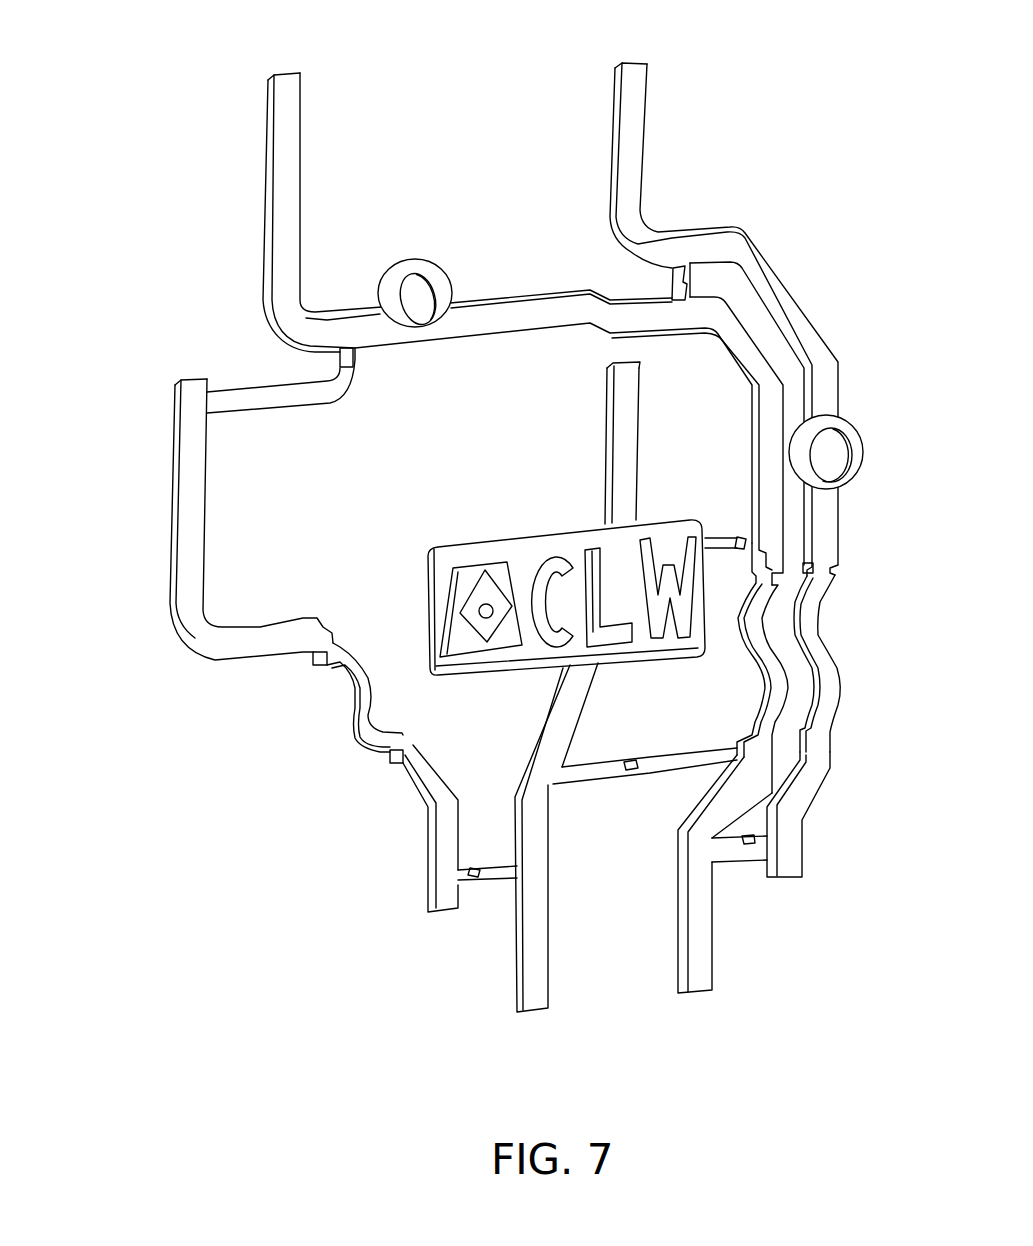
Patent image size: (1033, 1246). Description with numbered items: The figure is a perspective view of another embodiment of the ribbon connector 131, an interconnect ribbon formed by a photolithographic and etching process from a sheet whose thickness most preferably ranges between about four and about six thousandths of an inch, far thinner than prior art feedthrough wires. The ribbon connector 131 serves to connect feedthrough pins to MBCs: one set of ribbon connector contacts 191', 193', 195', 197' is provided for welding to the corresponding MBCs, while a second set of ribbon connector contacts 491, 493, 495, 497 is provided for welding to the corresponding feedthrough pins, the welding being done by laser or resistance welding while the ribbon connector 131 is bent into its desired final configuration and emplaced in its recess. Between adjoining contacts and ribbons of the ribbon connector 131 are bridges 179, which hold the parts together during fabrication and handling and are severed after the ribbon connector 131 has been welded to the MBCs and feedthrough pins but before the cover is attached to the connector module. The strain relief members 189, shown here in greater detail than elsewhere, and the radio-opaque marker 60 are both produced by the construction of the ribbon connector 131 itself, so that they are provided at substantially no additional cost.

The ribbon connector 131 is at (780, 97).
The ribbon connector contact 191' is at (475, 329).
The ribbon connector contact 193' is at (736, 319).
The ribbon connector contact 195' is at (405, 494).
The ribbon connector contact 197' is at (581, 443).
The bridge 179 is at (668, 279).
The strain relief member 189 is at (352, 707).
The radio-opaque marker 60 is at (437, 540).
The ribbon connector contact 491 is at (698, 988).
The ribbon connector contact 493 is at (792, 861).
The ribbon connector contact 495 is at (428, 892).
The ribbon connector contact 497 is at (537, 1005).